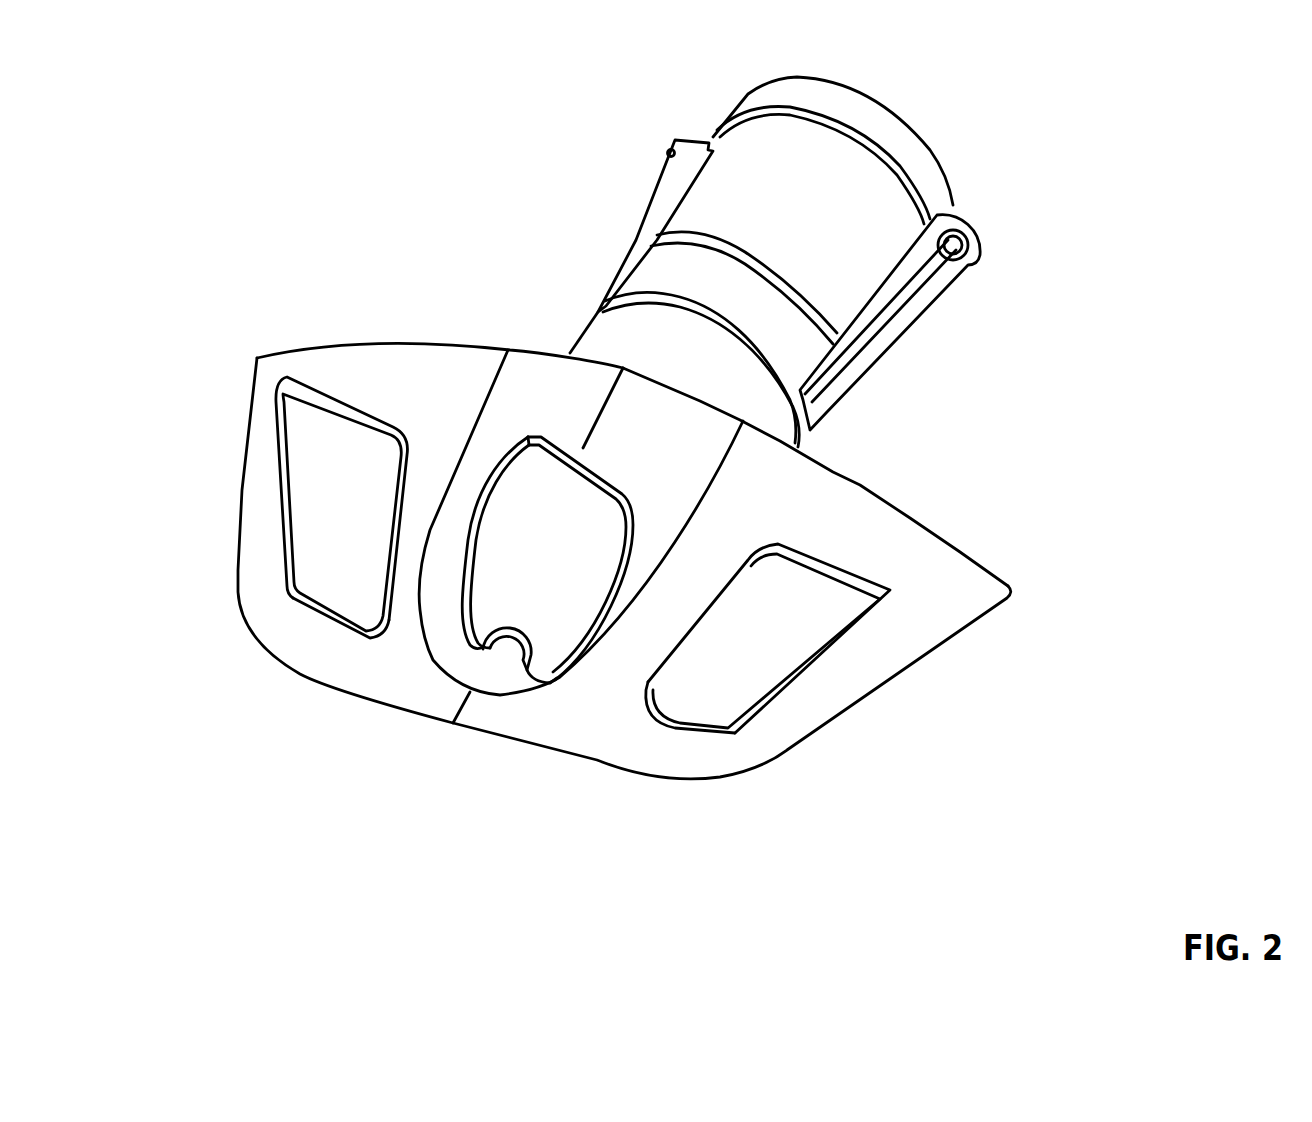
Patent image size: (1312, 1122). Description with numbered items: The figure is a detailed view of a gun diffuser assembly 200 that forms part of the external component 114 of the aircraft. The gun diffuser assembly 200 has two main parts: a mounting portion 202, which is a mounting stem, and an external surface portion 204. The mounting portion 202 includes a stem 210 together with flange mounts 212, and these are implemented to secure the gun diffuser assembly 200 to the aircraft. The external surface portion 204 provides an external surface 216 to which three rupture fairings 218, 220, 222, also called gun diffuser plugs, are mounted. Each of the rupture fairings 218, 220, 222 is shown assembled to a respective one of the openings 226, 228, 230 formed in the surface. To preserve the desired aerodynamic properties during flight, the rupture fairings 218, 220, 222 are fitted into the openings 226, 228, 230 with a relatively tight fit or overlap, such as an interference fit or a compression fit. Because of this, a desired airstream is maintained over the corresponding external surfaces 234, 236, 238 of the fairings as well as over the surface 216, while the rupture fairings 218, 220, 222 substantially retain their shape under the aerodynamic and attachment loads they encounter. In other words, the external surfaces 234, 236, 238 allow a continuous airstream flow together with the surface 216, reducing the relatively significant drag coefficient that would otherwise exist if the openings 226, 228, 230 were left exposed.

The external component 114 is at (1080, 90).
The gun diffuser assembly 200 is at (1007, 167).
The mounting portion 202 is at (498, 270).
The external surface portion 204 is at (278, 330).
The stem 210 is at (853, 100).
The flange mounts 212 is at (687, 140).
The external surface 216 is at (833, 473).
The rupture fairing 218 is at (298, 492).
The rupture fairing 220 is at (550, 640).
The rupture fairing 222 is at (808, 648).
The opening 226 is at (338, 632).
The opening 228 is at (523, 680).
The opening 230 is at (750, 727).
The external surface 234 is at (363, 521).
The external surface 236 is at (561, 580).
The external surface 238 is at (768, 656).